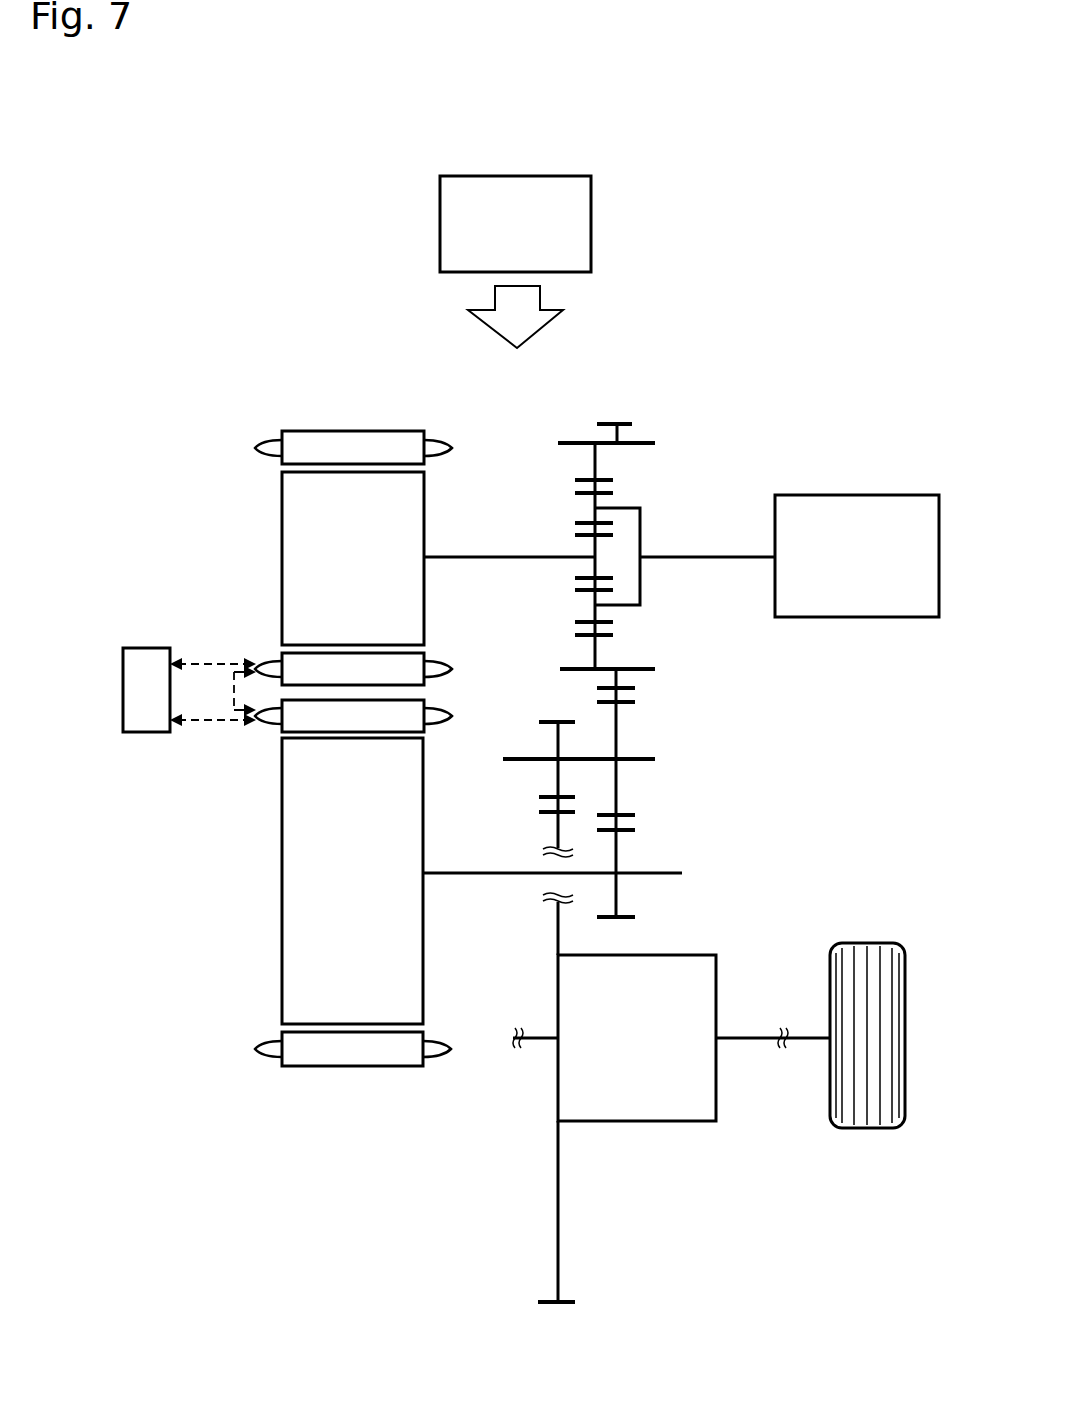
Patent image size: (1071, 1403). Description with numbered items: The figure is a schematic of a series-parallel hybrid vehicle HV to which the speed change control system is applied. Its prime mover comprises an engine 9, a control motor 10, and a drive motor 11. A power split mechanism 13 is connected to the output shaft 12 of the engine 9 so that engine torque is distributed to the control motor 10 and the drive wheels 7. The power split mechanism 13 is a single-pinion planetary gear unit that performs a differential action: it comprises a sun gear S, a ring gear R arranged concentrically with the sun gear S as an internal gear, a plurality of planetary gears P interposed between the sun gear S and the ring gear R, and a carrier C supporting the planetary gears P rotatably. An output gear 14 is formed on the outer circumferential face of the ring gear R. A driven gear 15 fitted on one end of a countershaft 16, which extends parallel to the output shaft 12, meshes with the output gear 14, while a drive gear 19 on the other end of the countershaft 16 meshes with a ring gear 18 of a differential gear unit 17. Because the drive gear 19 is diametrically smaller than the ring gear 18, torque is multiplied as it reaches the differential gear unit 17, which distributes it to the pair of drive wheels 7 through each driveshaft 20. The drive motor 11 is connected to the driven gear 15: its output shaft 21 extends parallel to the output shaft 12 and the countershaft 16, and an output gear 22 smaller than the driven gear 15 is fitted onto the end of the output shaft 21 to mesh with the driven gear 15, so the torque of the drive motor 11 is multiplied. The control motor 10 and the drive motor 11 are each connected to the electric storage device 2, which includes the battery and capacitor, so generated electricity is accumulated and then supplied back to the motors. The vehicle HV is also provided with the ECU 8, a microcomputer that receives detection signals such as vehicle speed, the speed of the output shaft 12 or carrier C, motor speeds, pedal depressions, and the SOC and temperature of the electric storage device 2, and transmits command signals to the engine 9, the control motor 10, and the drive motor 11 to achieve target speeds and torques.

The electric storage device 2 is at (149, 736).
The drive wheels 7 is at (871, 943).
The ECU 8 is at (521, 176).
The engine 9 is at (858, 495).
The control motor 10 is at (348, 426).
The drive motor 11 is at (272, 906).
The output shaft 12 is at (737, 557).
The power split mechanism 13 is at (556, 518).
The output gear 14 is at (604, 424).
The driven gear 15 is at (637, 701).
The countershaft 16 is at (644, 759).
The differential gear unit 17 is at (681, 955).
The ring gear 18 is at (551, 1305).
The drive gear 19 is at (546, 722).
The driveshaft 20 is at (746, 1038).
The output shaft 21 is at (488, 873).
The output gear 22 is at (637, 823).
The vehicle HV is at (788, 292).
The ring gear R is at (576, 485).
The sun gear S is at (576, 529).
The carrier C is at (641, 531).
The planetary gears P is at (612, 489).